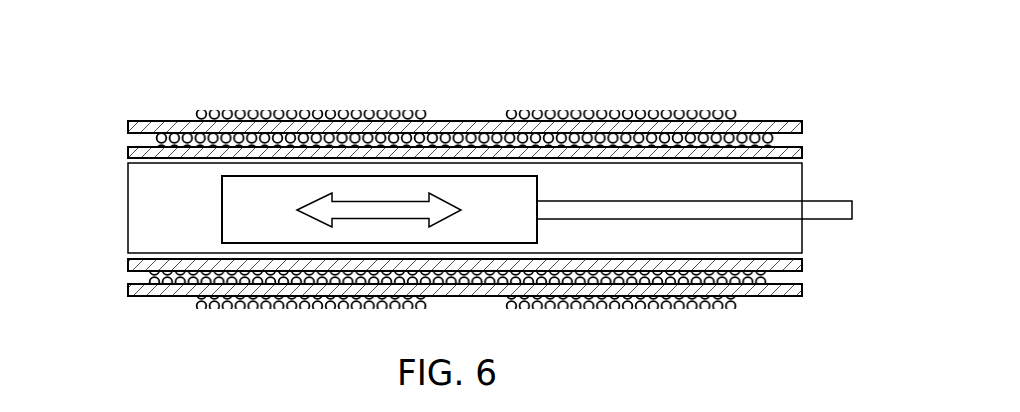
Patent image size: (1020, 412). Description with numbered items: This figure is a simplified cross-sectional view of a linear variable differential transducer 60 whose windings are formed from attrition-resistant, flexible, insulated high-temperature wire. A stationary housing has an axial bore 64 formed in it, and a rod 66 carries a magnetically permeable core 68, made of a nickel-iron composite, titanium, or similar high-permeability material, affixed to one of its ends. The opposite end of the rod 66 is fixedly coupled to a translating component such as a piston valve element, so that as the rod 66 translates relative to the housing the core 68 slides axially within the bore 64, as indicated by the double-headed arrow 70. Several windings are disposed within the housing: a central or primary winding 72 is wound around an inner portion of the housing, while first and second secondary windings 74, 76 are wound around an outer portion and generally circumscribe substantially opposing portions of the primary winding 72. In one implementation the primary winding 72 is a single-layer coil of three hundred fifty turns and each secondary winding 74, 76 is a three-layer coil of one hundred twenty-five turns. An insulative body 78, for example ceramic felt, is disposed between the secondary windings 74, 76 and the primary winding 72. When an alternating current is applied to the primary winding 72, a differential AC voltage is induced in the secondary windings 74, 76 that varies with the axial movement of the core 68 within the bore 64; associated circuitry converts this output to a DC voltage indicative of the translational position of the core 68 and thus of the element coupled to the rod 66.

The linear variable differential transducer 60 is at (145, 85).
The axial bore 64 is at (128, 213).
The rod 66 is at (829, 201).
The magnetically permeable core 68 is at (222, 212).
The double-headed arrow 70 is at (449, 204).
The primary winding 72 is at (154, 282).
The first secondary winding 74 is at (200, 111).
The second secondary winding 76 is at (510, 111).
The insulative body 78 is at (778, 121).